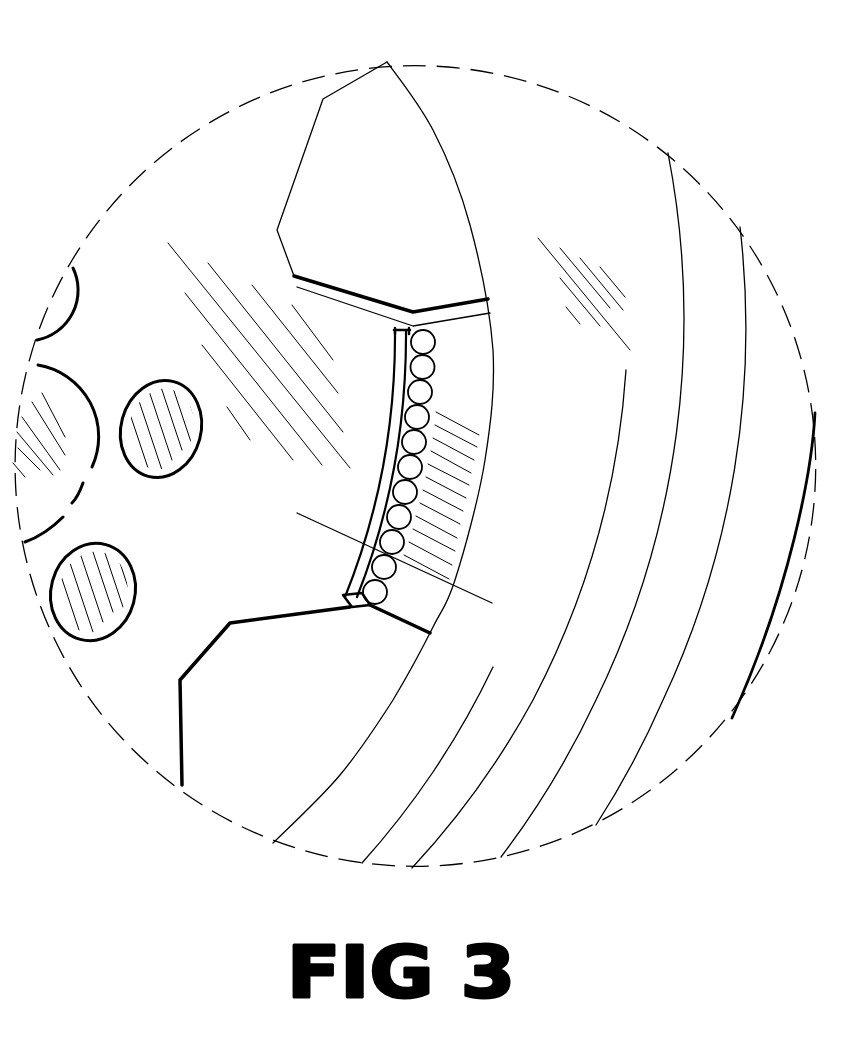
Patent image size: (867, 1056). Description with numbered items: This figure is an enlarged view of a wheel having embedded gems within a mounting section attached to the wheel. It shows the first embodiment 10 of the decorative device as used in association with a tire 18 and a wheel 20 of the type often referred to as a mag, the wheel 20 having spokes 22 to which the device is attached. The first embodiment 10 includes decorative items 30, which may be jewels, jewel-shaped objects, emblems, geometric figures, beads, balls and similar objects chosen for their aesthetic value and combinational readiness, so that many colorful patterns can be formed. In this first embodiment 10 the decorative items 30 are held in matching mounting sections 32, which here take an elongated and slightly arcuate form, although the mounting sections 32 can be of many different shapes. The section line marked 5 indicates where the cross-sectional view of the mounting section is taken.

The first embodiment 10 is at (205, 70).
The tire 18 is at (717, 248).
The wheel 20 is at (179, 182).
The spokes 22 is at (340, 333).
The decorative items 30 is at (430, 372).
The mounting sections 32 is at (383, 368).
The section line 5- 5 is at (483, 648).